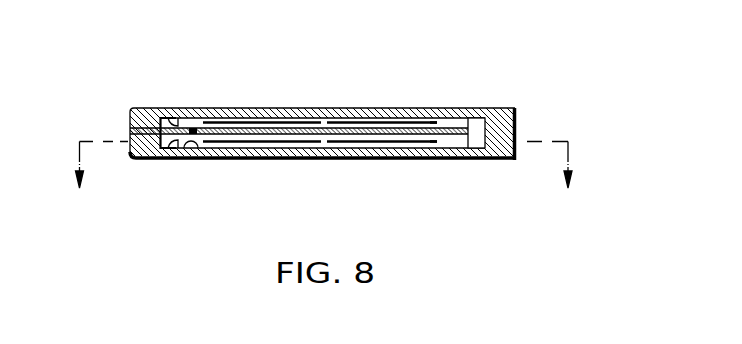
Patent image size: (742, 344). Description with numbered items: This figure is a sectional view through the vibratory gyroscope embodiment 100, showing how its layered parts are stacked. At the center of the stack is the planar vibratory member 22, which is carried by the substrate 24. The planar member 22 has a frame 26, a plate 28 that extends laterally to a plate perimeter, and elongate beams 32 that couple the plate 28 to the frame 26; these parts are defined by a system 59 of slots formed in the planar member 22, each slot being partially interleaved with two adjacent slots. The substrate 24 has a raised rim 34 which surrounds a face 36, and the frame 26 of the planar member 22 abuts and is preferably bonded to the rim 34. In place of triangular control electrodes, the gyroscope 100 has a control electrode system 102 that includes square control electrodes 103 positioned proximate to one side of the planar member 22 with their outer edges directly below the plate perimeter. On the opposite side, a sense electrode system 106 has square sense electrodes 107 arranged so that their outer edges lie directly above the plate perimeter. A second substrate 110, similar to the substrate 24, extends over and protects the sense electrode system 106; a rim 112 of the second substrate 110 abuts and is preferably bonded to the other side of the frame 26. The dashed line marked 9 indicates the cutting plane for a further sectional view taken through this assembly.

The vibratory gyroscope embodiment 100 is at (518, 119).
The second substrate 110 is at (517, 109).
The frame 26 is at (136, 109).
The substrate 24 is at (516, 160).
The plate 28 is at (343, 127).
The elongate beams 32 is at (194, 124).
The face 36 is at (198, 150).
The planar vibratory member 22 is at (493, 121).
The rim of the second substrate 112 is at (181, 116).
The raised rim 34 is at (173, 150).
The system of slots 59 is at (196, 105).
The sense electrodes 107 is at (390, 124).
The control electrodes 103 is at (405, 144).
The sense electrode system 106 is at (458, 122).
The control electrode system 102 is at (448, 142).
The section line 9- 9 is at (323, 181).